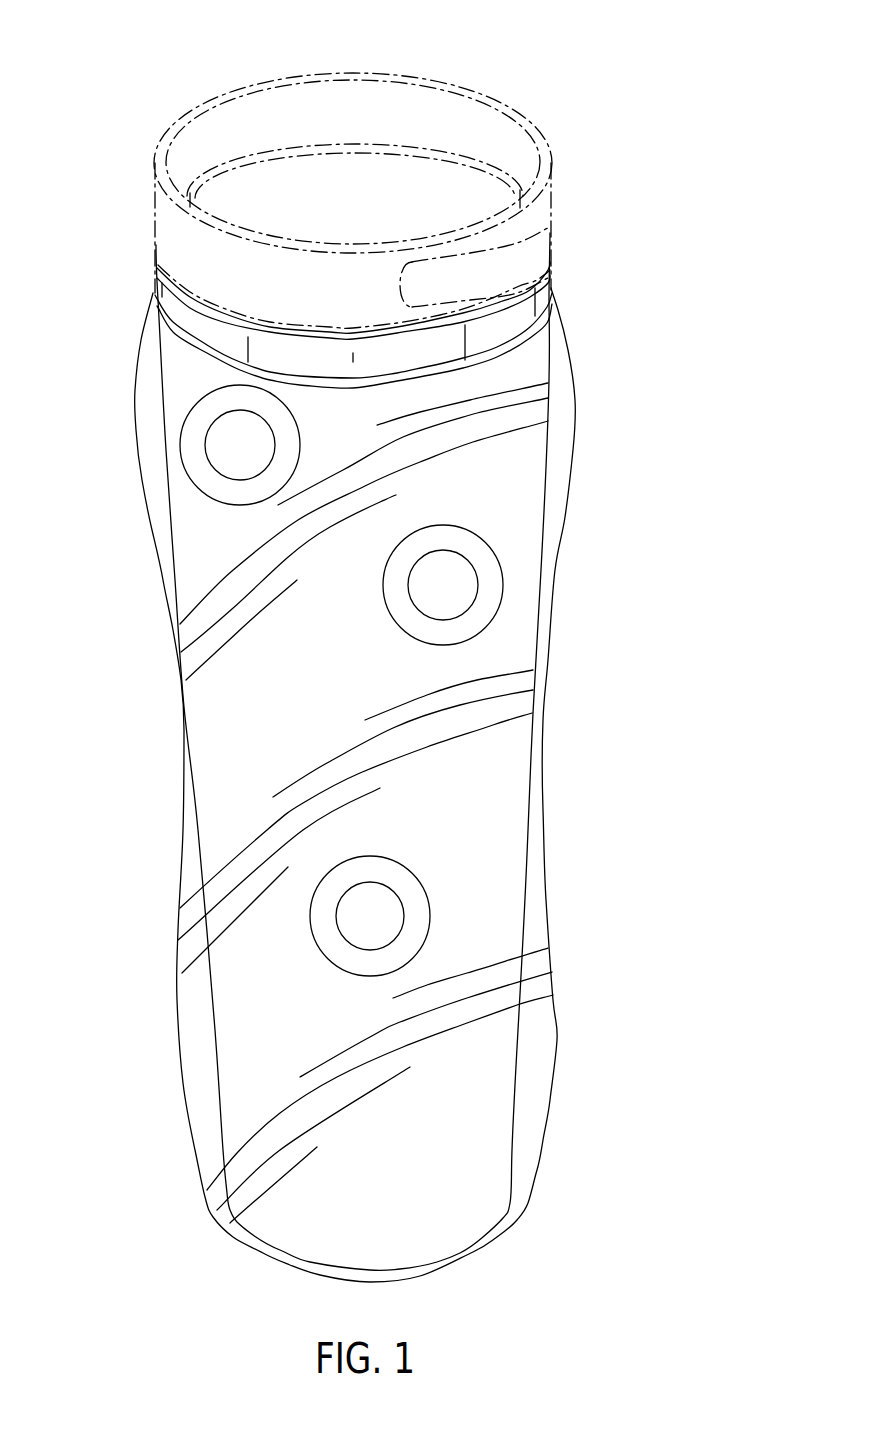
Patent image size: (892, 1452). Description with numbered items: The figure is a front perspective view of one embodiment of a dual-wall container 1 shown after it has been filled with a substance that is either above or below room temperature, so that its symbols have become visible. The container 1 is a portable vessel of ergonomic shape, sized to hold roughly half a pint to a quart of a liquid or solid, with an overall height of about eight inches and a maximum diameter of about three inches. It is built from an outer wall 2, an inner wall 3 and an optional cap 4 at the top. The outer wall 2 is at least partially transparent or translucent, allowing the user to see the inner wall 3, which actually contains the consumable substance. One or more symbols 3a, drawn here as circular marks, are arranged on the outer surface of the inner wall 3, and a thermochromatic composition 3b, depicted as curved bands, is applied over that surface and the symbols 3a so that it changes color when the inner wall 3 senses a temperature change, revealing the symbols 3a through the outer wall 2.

The dual-wall container 1 is at (431, 646).
The outer wall 2 is at (573, 1032).
The inner wall 3 is at (412, 751).
The symbols 3a is at (493, 583).
The thermochromatic composition coating 3b is at (483, 803).
The cap 4 is at (508, 65).